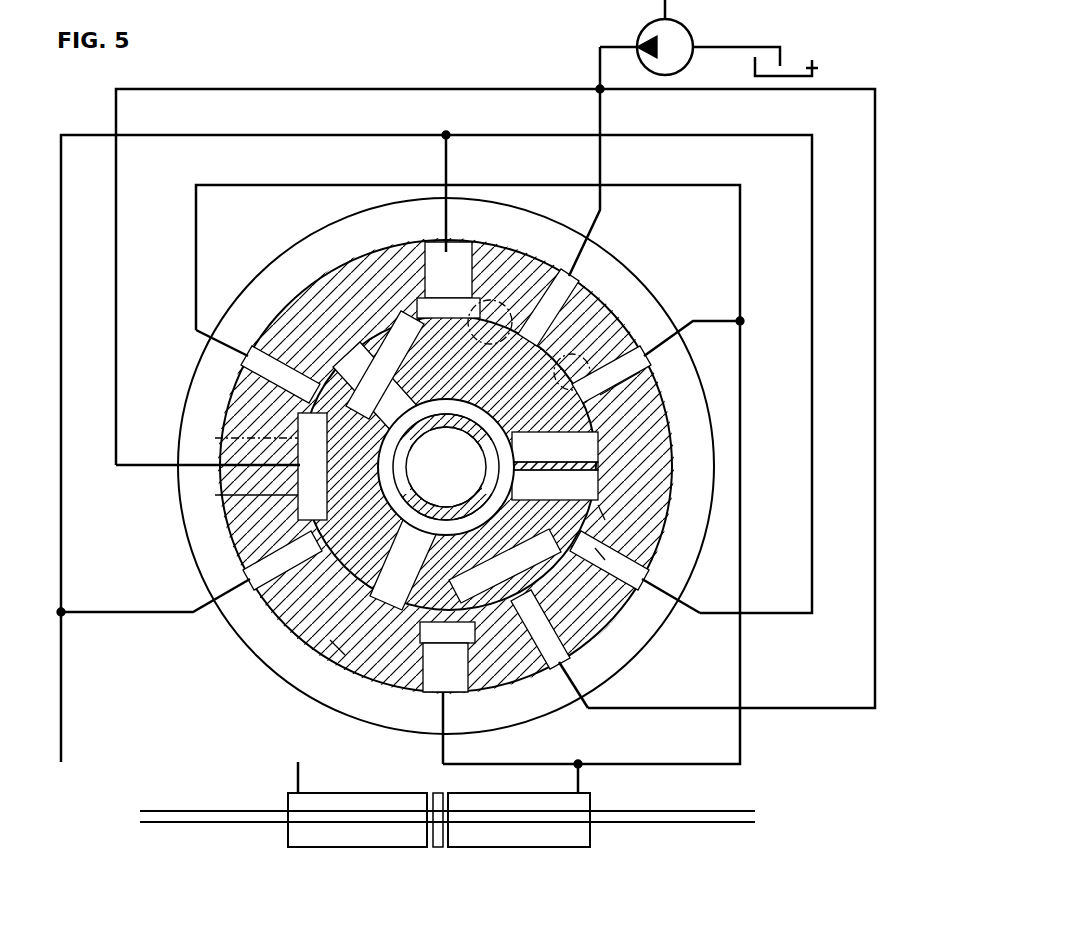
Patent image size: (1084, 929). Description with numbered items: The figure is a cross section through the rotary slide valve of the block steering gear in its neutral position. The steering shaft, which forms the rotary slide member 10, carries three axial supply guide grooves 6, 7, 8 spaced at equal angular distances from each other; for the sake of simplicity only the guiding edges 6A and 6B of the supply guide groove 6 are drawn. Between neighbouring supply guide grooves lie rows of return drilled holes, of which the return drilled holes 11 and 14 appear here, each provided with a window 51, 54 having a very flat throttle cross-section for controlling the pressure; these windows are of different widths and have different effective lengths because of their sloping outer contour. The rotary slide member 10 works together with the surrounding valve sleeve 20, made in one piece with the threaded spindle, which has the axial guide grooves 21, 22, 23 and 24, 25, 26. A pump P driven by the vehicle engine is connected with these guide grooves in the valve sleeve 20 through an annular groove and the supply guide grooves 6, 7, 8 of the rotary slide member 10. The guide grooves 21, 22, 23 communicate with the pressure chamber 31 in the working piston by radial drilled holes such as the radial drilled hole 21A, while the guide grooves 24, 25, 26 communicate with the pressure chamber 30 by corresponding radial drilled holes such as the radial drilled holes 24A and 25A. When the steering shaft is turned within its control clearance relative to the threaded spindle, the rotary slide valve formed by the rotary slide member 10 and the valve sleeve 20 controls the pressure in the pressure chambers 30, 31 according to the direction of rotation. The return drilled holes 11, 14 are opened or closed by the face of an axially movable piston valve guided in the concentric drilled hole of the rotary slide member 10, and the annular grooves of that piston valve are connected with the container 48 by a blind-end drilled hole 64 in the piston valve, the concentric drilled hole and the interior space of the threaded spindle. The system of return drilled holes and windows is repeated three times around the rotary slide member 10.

The supply guide groove 6 is at (522, 365).
The guiding edge 6A is at (492, 298).
The guiding edge 6B is at (605, 300).
The supply guide groove 7 is at (595, 640).
The supply guide groove 8 is at (300, 492).
The rotary slide member 10 is at (602, 563).
The return drilled hole 11 is at (716, 395).
The return drilled hole 14 is at (640, 488).
The valve sleeve 20 is at (670, 430).
The guide groove 21 is at (423, 290).
The radial drilled hole 21A is at (441, 290).
The guide groove 22 is at (640, 552).
The guide groove 23 is at (283, 635).
The guide groove 24 is at (641, 357).
The slot channel 24A is at (628, 340).
The guide groove 25 is at (528, 590).
The radial drilled hole 25A is at (433, 640).
The guide groove 26 is at (262, 380).
The pressure chamber 30 is at (565, 832).
The pressure chamber 31 is at (325, 830).
The container 48 is at (805, 68).
The window 51 is at (628, 392).
The window 54 is at (605, 520).
The blind-end drilled hole 64 is at (340, 660).
The pump P is at (688, 36).